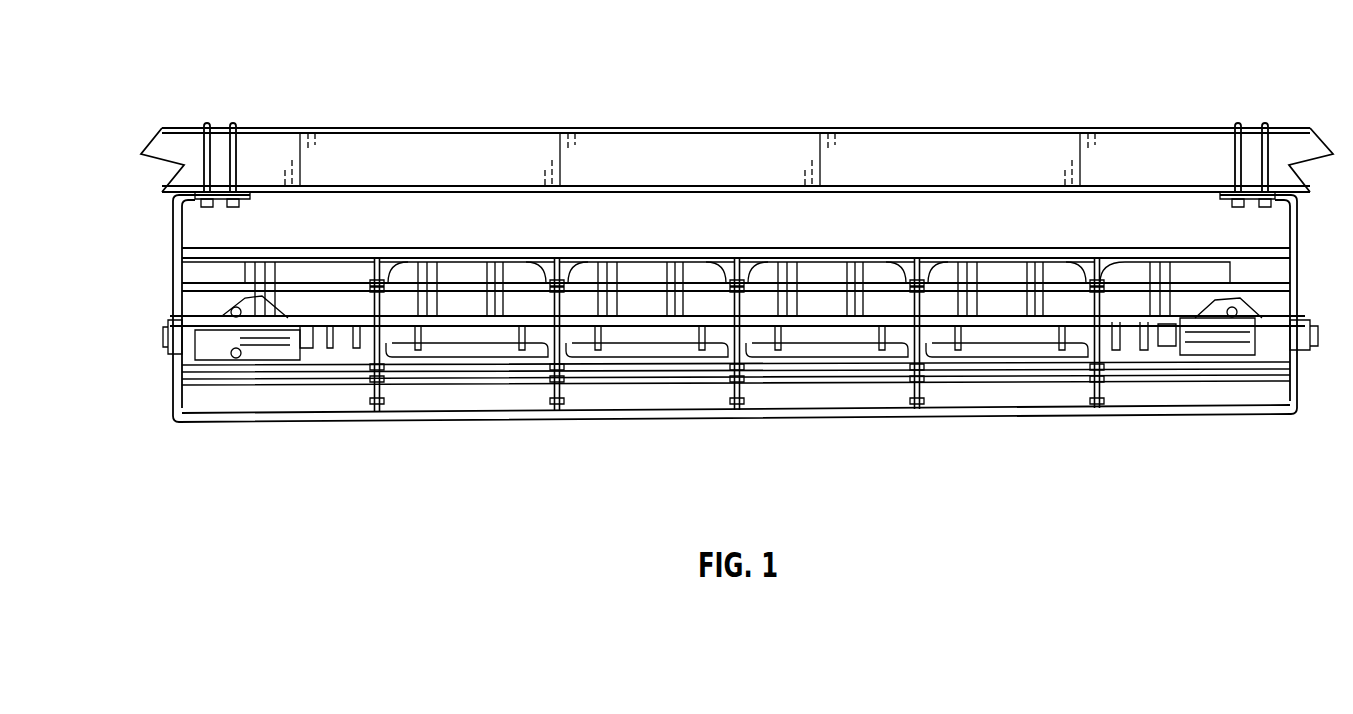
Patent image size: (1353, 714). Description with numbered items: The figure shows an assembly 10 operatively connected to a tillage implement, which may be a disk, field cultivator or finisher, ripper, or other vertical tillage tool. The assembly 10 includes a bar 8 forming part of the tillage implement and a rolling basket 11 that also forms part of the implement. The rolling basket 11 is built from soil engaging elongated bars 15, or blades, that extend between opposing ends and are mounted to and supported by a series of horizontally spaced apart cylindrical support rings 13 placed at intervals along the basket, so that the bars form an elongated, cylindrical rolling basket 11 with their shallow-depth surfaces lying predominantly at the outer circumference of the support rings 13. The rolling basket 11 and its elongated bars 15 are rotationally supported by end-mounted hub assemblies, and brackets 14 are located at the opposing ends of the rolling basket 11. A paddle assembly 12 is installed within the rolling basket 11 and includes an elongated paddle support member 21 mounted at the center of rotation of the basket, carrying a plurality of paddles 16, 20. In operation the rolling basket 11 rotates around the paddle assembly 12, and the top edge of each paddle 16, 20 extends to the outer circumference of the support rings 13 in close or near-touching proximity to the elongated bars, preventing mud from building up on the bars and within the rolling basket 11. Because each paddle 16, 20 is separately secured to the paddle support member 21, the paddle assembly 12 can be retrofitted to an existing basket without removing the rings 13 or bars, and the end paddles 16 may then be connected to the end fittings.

The bar 8 is at (451, 198).
The assembly 10 is at (822, 54).
The rolling basket 11 is at (718, 418).
The paddle assembly 12 is at (289, 318).
The cylindrical support rings 13 is at (192, 402).
The brackets 14 is at (173, 233).
The elongated bars 15 is at (736, 252).
The end paddles 16 is at (327, 268).
The paddles 20 is at (512, 268).
The elongated paddle support member 21 is at (992, 346).